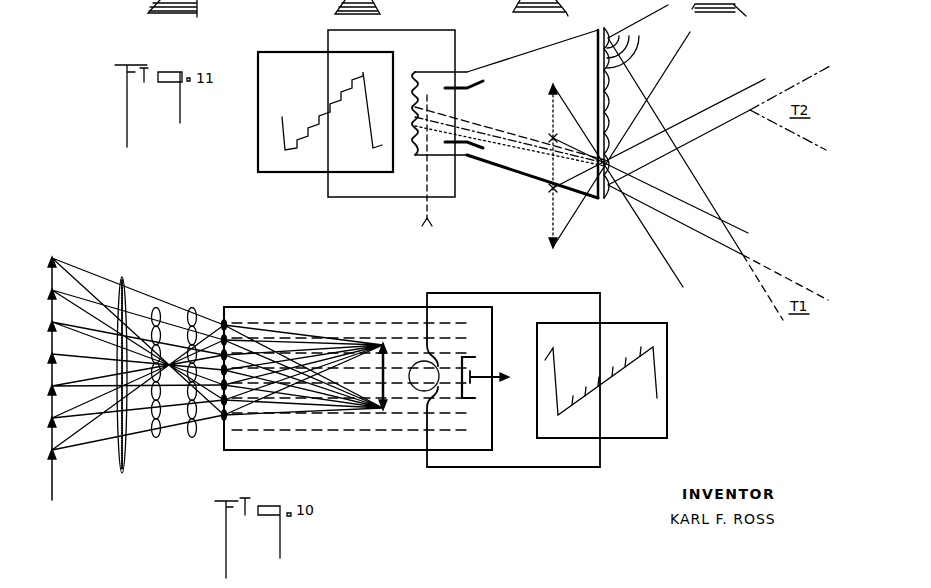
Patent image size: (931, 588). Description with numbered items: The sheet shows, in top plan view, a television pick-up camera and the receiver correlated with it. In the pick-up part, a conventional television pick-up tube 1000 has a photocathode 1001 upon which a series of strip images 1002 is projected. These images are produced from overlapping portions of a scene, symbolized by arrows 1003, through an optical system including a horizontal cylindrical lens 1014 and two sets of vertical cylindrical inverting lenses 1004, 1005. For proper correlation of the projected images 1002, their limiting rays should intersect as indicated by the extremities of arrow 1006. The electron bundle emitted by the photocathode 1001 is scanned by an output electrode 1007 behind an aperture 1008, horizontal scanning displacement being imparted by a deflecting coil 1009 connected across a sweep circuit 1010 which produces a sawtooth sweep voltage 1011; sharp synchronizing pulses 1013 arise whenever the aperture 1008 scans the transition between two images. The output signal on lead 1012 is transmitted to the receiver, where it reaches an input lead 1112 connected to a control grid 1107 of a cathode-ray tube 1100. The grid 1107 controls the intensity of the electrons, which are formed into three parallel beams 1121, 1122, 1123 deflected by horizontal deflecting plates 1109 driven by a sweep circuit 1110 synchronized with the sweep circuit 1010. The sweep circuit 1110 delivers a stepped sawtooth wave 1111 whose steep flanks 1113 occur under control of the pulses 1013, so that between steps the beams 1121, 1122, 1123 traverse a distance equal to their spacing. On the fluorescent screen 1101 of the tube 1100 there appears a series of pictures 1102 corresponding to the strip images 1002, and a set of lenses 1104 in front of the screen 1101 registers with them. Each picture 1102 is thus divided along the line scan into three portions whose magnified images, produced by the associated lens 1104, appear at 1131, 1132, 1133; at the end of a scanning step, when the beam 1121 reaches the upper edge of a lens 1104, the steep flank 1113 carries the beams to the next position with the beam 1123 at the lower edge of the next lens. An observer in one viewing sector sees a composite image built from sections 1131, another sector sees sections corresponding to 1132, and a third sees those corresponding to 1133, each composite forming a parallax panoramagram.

In FIG. 10, the television pick-up tube 1000 is at (360, 300).
In FIG. 10, the photocathode 1001 is at (224, 440).
In FIG. 10, the strip images 1002 is at (233, 332).
In FIG. 10, the arrows 1003 is at (63, 307).
In FIG. 10, the vertical cylindrical inverting lenses 1004 is at (155, 420).
In FIG. 10, the vertical cylindrical inverting lenses 1005 is at (192, 310).
In FIG. 10, the arrow 1006 is at (388, 412).
In FIG. 10, the output electrode 1007 is at (476, 370).
In FIG. 10, the aperture 1008 is at (453, 382).
In FIG. 10, the deflecting coil 1009 is at (418, 392).
In FIG. 10, the sweep circuit 1010 is at (637, 323).
In FIG. 10, the sawtooth sweep voltage 1011 is at (562, 413).
In FIG. 10, the output lead 1012 is at (496, 383).
In FIG. 10, the synchronizing pulses 1013 is at (598, 378).
In FIG. 10, the horizontal cylindrical lens 1014 is at (118, 472).
In FIG. 11, the cathode-ray tube 1100 is at (499, 55).
In FIG. 11, the fluorescent screen 1101 is at (597, 34).
In FIG. 11, the pictures 1102 is at (626, 60).
In FIG. 11, the lenses 1104 is at (617, 44).
In FIG. 11, the control grid 1107 is at (443, 88).
In FIG. 11, the horizontal deflecting plates 1109 is at (482, 84).
In FIG. 11, the sweep circuit 1110 is at (285, 170).
In FIG. 11, the stepped sawtooth wave 1111 is at (313, 117).
In FIG. 11, the input lead 1112 is at (428, 206).
In FIG. 11, the steep flanks 1113 is at (340, 93).
In FIG. 11, the electron beam 1121 is at (515, 128).
In FIG. 11, the electron beam 1122 is at (524, 150).
In FIG. 11, the electron beam 1123 is at (507, 153).
In FIG. 11, the image section 1131 is at (551, 88).
In FIG. 11, the image section 1132 is at (550, 190).
In FIG. 11, the image section 1133 is at (551, 220).